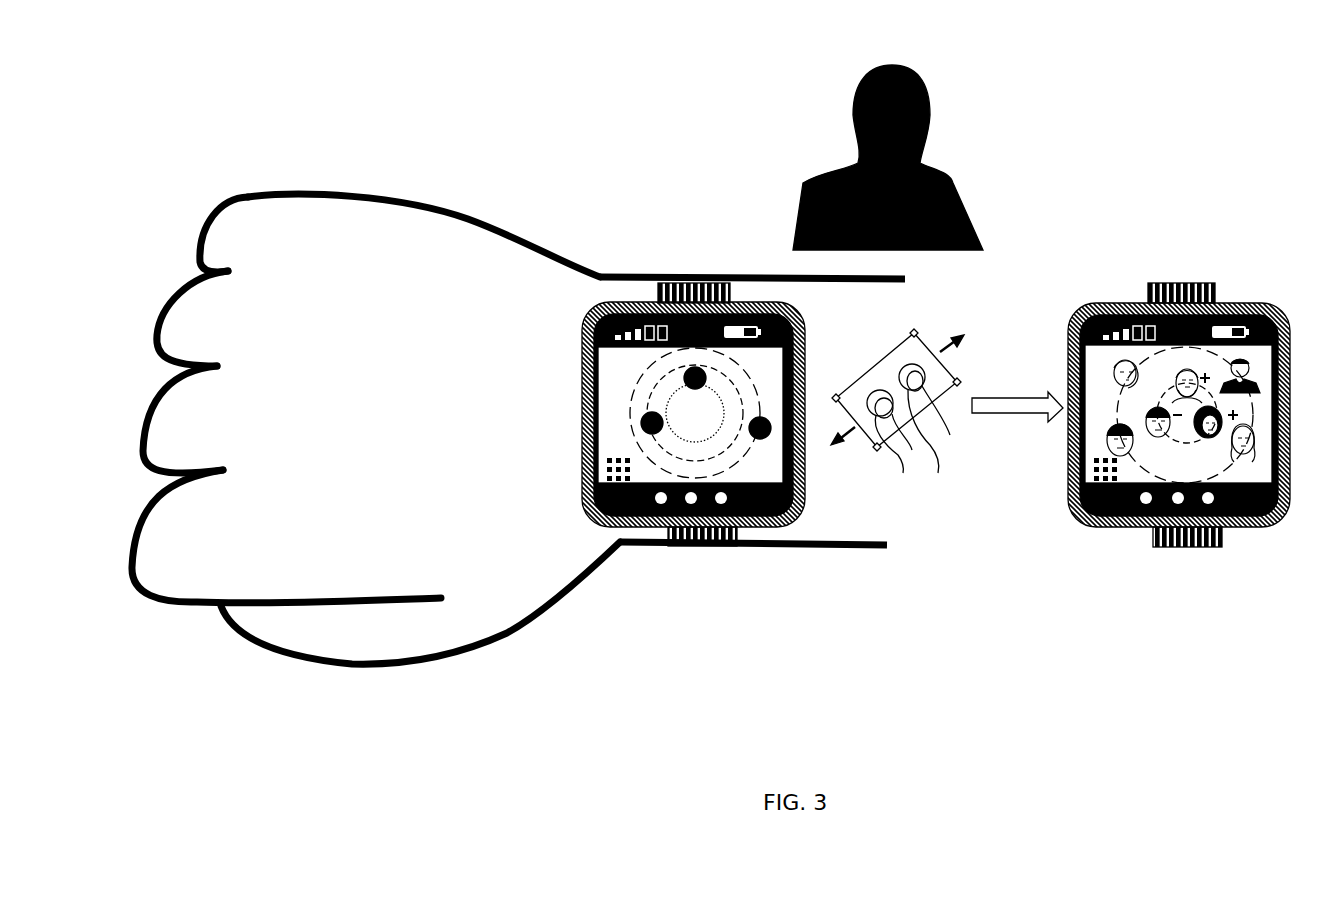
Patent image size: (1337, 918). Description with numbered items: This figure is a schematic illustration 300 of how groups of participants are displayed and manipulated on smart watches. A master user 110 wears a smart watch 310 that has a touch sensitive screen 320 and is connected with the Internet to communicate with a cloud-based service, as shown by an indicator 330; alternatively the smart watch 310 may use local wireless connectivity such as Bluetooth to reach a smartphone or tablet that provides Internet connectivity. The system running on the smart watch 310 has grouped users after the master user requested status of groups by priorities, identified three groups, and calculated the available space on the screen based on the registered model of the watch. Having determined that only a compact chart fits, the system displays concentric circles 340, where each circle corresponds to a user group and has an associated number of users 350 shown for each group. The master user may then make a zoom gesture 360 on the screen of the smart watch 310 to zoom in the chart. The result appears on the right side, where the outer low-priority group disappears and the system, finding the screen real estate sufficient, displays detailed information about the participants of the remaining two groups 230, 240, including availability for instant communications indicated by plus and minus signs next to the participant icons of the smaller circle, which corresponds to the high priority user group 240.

The master user 110 is at (842, 127).
The schematic illustration 300 is at (1196, 132).
The smart watch 310 is at (580, 368).
The touch sensitive screen 320 is at (618, 433).
The indicator 330 is at (640, 304).
The concentric circles 340 is at (752, 452).
The number of users 350 is at (770, 415).
The zoom gesture 360 is at (935, 347).
The user group 230 is at (1108, 402).
The high priority user group 240 is at (1102, 420).